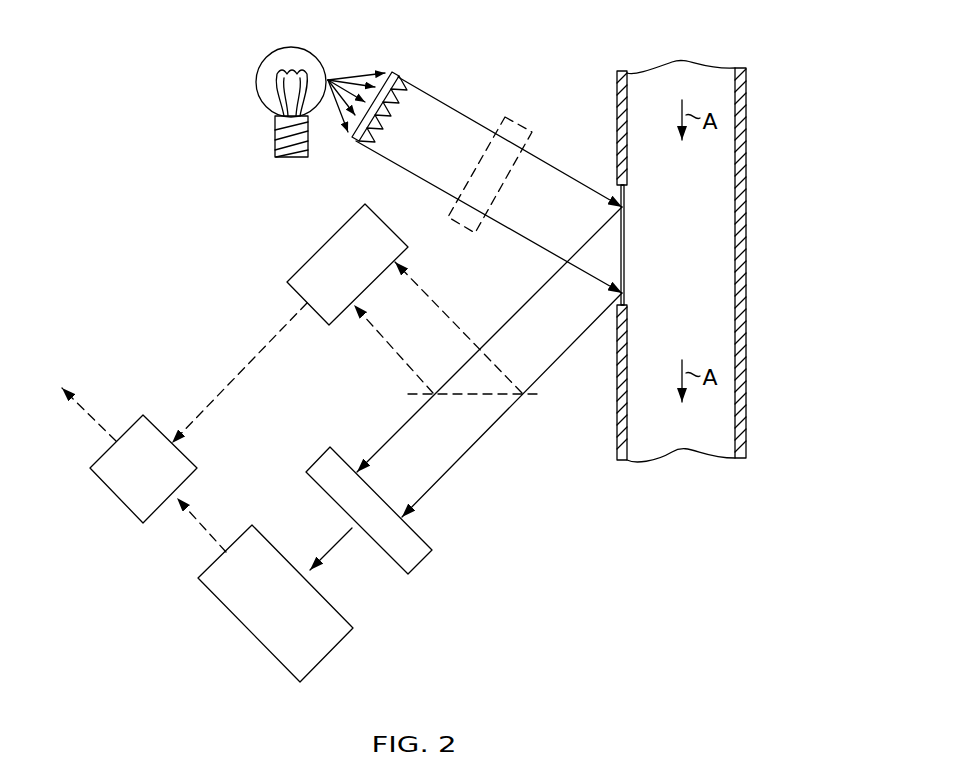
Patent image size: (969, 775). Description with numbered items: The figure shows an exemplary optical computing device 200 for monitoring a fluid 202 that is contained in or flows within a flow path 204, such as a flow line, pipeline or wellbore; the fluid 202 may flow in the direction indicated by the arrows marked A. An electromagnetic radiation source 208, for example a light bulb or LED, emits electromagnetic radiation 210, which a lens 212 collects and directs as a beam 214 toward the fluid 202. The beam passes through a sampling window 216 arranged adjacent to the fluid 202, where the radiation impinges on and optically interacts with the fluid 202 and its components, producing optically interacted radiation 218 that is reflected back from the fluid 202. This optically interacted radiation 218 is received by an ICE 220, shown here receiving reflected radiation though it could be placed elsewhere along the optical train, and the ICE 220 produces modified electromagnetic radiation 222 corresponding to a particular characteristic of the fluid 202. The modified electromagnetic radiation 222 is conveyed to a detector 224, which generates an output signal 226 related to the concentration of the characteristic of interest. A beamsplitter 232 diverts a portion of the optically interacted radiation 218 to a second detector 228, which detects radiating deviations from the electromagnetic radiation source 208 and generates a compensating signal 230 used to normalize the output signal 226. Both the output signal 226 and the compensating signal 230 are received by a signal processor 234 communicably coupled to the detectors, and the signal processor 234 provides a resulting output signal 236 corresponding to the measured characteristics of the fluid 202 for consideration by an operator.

The optical computing device 200 is at (186, 228).
The fluid 202 is at (668, 265).
The flow path 204 is at (748, 118).
The electromagnetic radiation source 208 is at (257, 68).
The electromagnetic radiation 210 is at (357, 72).
The lens 212 is at (400, 75).
The beam of electromagnetic radiation 214 is at (463, 115).
The sampling window 216 is at (627, 192).
The optically interacted radiation 218 is at (437, 481).
The ICE 220 is at (418, 557).
The modified electromagnetic radiation 222 is at (333, 548).
The detector 224 is at (327, 648).
The output signal 226 is at (202, 528).
The second detector 228 is at (343, 236).
The compensating signal 230 is at (243, 367).
The beamsplitter 232 is at (452, 396).
The signal processor 234 is at (108, 488).
The resulting output signal 236 is at (87, 415).